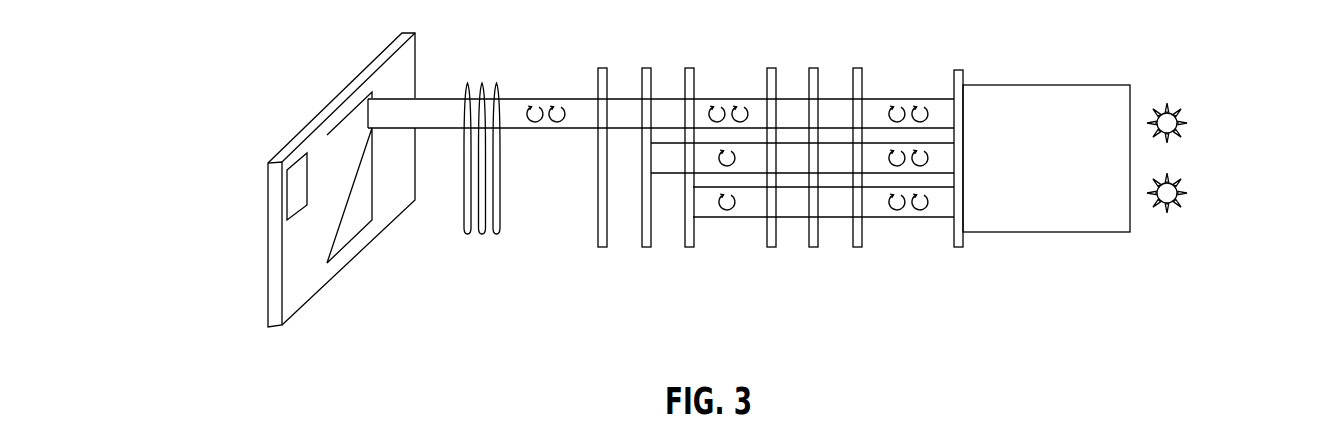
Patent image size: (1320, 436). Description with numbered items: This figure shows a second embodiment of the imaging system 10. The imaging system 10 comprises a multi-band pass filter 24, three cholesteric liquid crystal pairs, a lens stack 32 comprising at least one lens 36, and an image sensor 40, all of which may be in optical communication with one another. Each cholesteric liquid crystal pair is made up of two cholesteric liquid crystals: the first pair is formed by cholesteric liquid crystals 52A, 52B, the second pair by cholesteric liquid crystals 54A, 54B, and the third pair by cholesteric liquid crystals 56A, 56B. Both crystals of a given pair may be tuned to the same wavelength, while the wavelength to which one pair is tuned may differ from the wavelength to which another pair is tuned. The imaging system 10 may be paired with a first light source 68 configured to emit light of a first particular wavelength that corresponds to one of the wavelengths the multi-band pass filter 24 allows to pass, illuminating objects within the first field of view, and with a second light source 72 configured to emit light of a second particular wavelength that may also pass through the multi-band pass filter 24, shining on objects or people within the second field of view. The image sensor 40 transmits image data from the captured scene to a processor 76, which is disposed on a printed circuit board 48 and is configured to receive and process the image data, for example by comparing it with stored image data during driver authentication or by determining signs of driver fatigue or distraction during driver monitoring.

The imaging system 10 is at (233, 200).
The multi-band pass filter 24 is at (965, 238).
The lens stack 32 is at (513, 81).
The lens 36 is at (502, 233).
The image sensor 40 is at (338, 138).
The printed circuit board 48 is at (302, 267).
The first cholesteric liquid crystal 52A is at (863, 238).
The second cholesteric liquid crystal 52B is at (697, 240).
The first cholesteric liquid crystal 54A is at (820, 238).
The second cholesteric liquid crystal 54B is at (652, 238).
The first cholesteric liquid crystal 56A is at (777, 238).
The second cholesteric liquid crystal 56B is at (608, 238).
The first light source 68 is at (1188, 120).
The second light source 72 is at (1188, 188).
The processor 76 is at (298, 172).